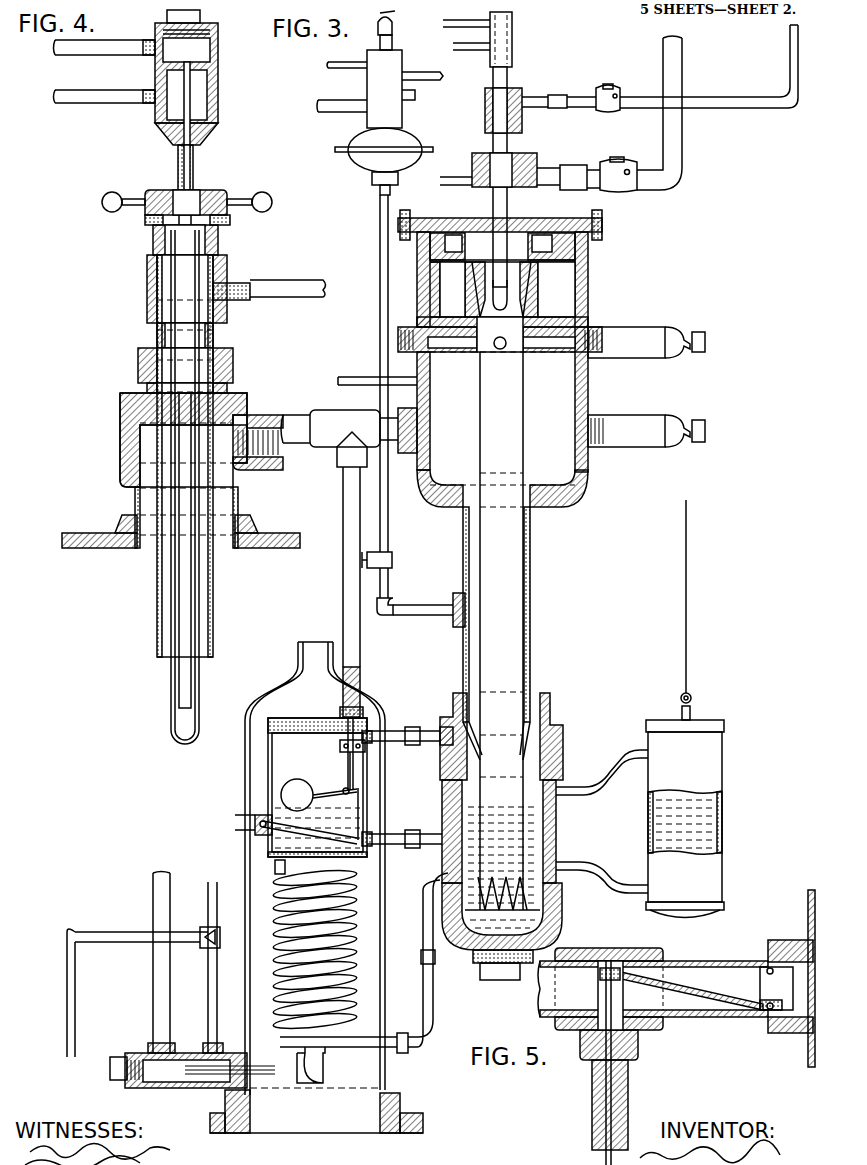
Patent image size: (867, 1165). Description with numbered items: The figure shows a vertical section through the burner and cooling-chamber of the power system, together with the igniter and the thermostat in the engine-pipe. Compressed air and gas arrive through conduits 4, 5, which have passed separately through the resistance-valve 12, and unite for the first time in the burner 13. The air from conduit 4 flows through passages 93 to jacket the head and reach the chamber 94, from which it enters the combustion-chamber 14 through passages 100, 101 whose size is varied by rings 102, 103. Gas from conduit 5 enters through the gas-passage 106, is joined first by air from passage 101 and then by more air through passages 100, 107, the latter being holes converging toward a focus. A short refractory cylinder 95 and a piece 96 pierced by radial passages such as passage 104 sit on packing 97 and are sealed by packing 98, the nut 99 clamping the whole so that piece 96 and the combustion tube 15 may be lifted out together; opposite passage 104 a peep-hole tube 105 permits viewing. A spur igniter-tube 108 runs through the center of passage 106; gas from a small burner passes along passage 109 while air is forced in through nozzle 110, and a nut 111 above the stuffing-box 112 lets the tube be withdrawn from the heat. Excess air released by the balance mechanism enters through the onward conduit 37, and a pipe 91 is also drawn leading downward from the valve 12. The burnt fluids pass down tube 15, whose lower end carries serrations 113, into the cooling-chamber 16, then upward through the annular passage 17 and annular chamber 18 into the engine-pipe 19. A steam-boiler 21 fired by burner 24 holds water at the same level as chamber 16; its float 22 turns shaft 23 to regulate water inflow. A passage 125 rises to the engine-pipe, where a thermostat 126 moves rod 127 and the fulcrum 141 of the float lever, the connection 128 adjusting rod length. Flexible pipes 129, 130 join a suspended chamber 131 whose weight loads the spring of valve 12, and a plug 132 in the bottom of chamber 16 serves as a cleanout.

In FIG. 4, the air conduit 4 is at (290, 425).
In FIG. 3, the air conduit 4 is at (676, 147).
In FIG. 4, the gas conduit 5 is at (283, 288).
In FIG. 3, the gas conduit 5 is at (717, 105).
In FIG. 3, the resistance-valve 12 is at (372, 118).
In FIG. 3, the burner 13 is at (506, 268).
In FIG. 3, the combustion-chamber 14 is at (513, 355).
In FIG. 3, the combustion tube 15 is at (515, 573).
In FIG. 3, the cooling-chamber 16 is at (557, 748).
In FIG. 3, the annular passage 17 is at (530, 645).
In FIG. 3, the annular chamber 18 is at (502, 429).
In FIG. 3, the engine-pipe 19 is at (316, 412).
In FIG. 5, the engine-pipe 19 is at (730, 958).
In FIG. 3, the steam-boiler 21 is at (317, 787).
In FIG. 3, the float 22 is at (293, 789).
In FIG. 3, the shaft 23 is at (250, 828).
In FIG. 3, the burner 24 is at (284, 875).
In FIG. 3, the onward conduit 37 is at (356, 377).
In FIG. 3, the pipe 91 is at (381, 216).
In FIG. 3, the passages 93 is at (518, 212).
In FIG. 3, the chamber 94 is at (450, 293).
In FIG. 3, the cylinder 95 is at (412, 330).
In FIG. 3, the piece 96 is at (590, 301).
In FIG. 3, the packing 97 is at (590, 372).
In FIG. 3, the packing 98 is at (430, 264).
In FIG. 3, the nut 99 is at (590, 248).
In FIG. 3, the passages 100 is at (590, 293).
In FIG. 3, the passage 101 is at (440, 270).
In FIG. 3, the ring 102 is at (588, 268).
In FIG. 3, the ring 103 is at (430, 232).
In FIG. 3, the radial passage 104 is at (600, 337).
In FIG. 3, the peep-hole tube 105 is at (700, 338).
In FIG. 4, the gas-passage 106 is at (206, 342).
In FIG. 3, the gas-passage 106 is at (493, 214).
In FIG. 3, the passages 107 is at (500, 334).
In FIG. 4, the igniter-tube 108 is at (172, 578).
In FIG. 4, the gas-passage 109 is at (193, 163).
In FIG. 4, the nozzle 110 is at (187, 100).
In FIG. 4, the nut 111 is at (227, 193).
In FIG. 4, the stuffing-box 112 is at (160, 235).
In FIG. 3, the serrations 113 is at (556, 903).
In FIG. 3, the passage 125 is at (353, 497).
In FIG. 5, the passage 125 is at (596, 1108).
In FIG. 5, the thermostat 126 is at (672, 973).
In FIG. 3, the rod 127 is at (356, 740).
In FIG. 5, the rod 127 is at (614, 1089).
In FIG. 3, the connection 128 is at (343, 743).
In FIG. 3, the flexible pipe 129 is at (627, 887).
In FIG. 3, the flexible pipe 130 is at (628, 752).
In FIG. 3, the chamber 131 is at (707, 762).
In FIG. 3, the plug 132 is at (490, 973).
In FIG. 3, the fulcrum 141 is at (346, 789).